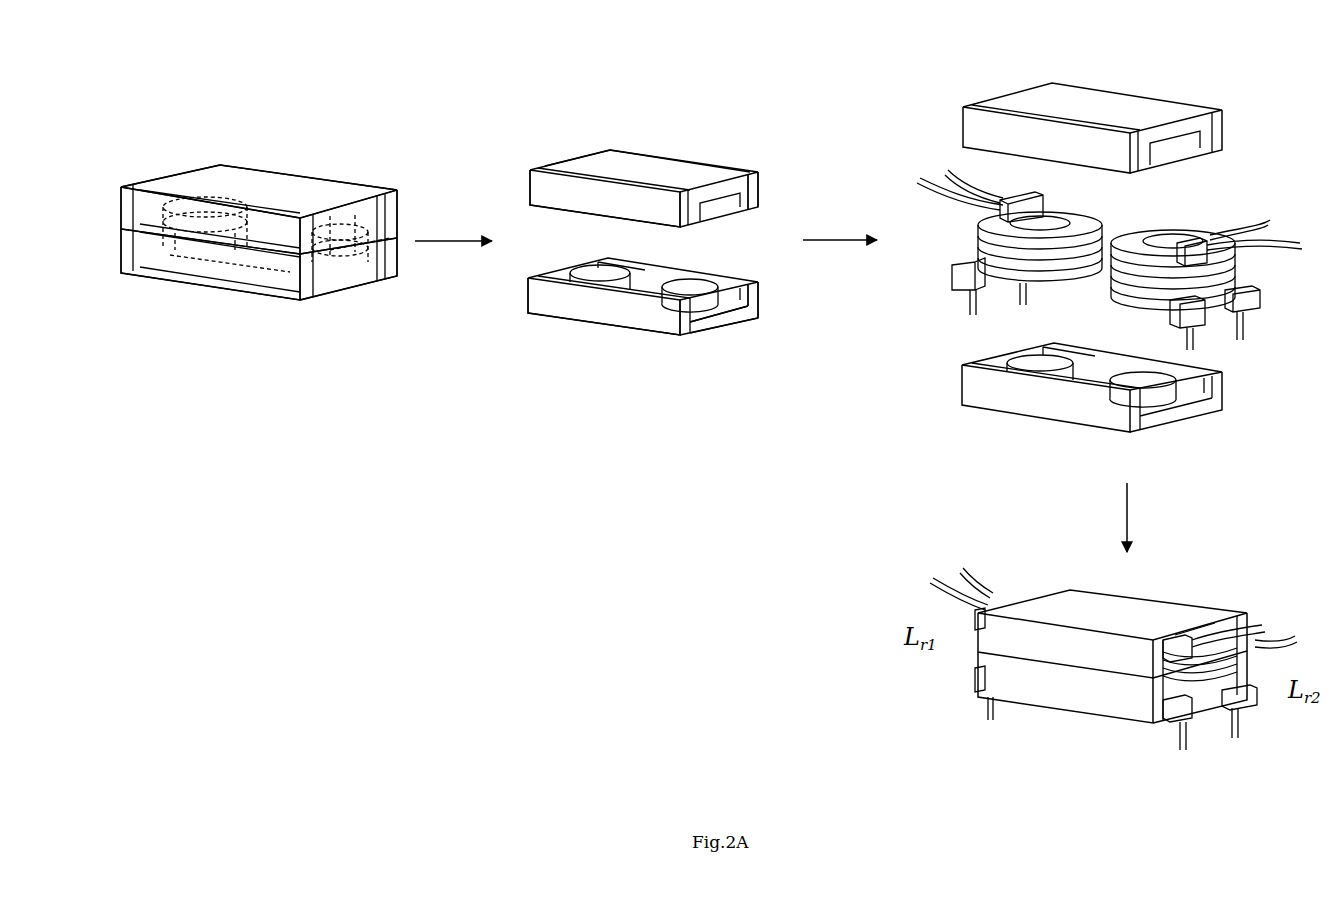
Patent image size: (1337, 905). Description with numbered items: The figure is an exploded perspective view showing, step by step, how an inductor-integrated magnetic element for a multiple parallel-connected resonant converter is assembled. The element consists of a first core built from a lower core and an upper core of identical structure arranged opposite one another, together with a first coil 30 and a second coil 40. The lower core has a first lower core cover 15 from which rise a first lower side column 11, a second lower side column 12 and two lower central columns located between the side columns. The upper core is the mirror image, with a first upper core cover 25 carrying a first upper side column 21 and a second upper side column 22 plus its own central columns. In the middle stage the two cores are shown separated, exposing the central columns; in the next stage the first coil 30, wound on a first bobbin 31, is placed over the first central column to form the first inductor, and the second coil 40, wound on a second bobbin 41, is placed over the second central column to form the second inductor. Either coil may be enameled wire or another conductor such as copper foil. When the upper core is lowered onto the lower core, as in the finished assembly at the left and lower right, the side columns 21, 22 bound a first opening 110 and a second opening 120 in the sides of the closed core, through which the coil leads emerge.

The first lower side column 11 is at (560, 305).
The second lower side column 12 is at (762, 290).
The first lower core cover 15 is at (716, 325).
The first upper side column 21 is at (540, 196).
The second upper side column 22 is at (762, 188).
The first upper core cover 25 is at (590, 163).
The first coil 30 is at (978, 252).
The first bobbin 31 is at (1058, 208).
The second coil 40 is at (1240, 285).
The second bobbin 41 is at (1212, 222).
The first opening 110 is at (168, 177).
The second opening 120 is at (354, 257).